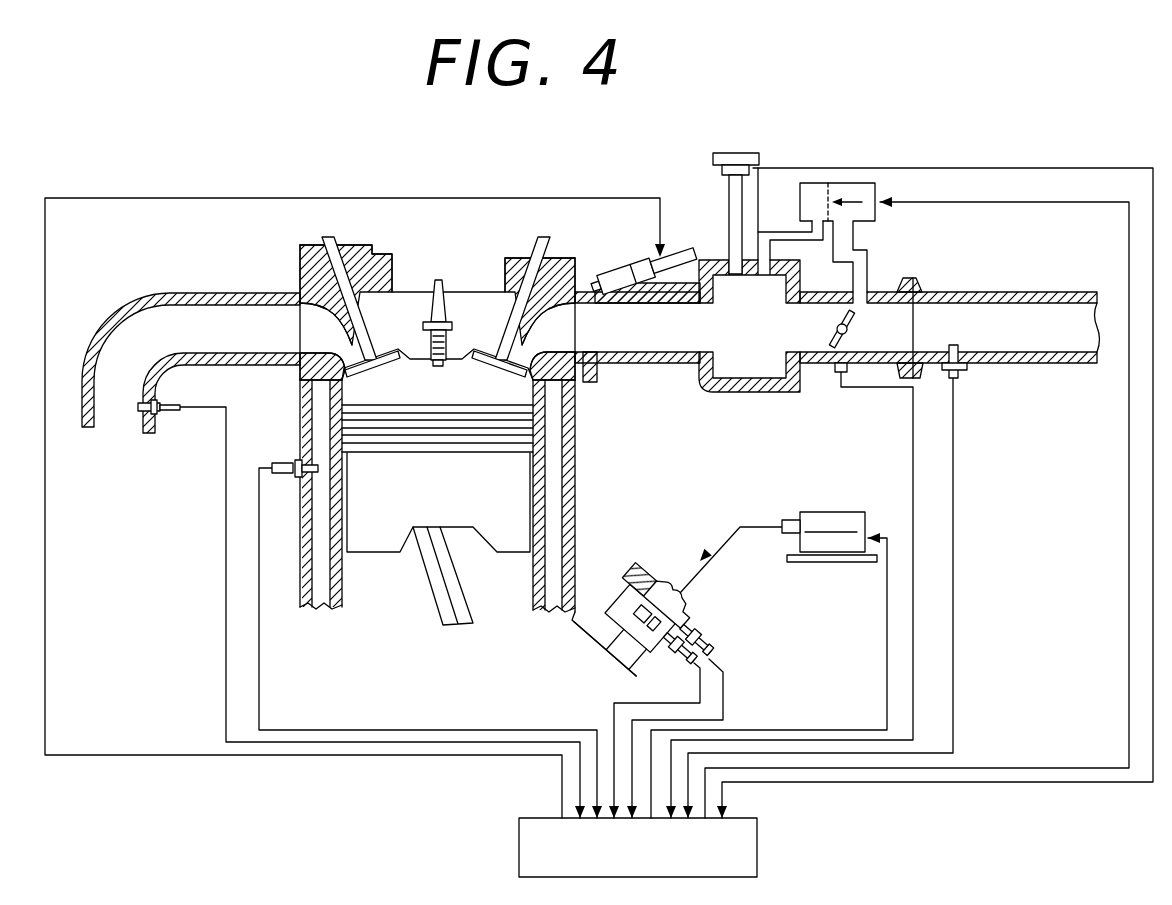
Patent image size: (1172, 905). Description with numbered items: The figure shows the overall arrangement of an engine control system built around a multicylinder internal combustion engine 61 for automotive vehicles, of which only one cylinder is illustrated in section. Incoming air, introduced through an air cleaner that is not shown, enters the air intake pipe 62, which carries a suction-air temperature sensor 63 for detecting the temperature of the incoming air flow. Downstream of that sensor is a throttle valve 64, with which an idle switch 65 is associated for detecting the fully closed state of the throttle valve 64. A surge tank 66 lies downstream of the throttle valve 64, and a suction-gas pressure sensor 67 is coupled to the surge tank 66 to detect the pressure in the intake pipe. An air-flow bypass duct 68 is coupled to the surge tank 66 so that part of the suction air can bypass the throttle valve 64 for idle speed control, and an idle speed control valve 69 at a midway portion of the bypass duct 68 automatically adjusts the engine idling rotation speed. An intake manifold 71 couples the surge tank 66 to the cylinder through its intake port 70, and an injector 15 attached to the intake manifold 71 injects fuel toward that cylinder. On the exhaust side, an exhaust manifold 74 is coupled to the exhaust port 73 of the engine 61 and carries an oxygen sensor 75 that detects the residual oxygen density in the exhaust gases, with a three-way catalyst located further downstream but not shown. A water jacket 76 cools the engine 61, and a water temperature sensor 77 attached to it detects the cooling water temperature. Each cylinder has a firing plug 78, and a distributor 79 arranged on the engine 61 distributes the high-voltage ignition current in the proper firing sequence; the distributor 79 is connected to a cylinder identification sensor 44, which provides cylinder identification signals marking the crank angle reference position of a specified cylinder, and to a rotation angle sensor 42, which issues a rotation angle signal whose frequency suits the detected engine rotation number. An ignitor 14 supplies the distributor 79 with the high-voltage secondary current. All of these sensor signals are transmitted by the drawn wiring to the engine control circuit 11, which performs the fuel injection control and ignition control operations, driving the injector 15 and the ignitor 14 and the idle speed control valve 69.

The engine control circuit 11 is at (757, 856).
The ignitor 14 is at (832, 520).
The injector 15 is at (678, 252).
The rotation angle sensor 42 is at (682, 655).
The cylinder identification sensor 44 is at (706, 637).
The engine 61 is at (578, 437).
The air intake pipe 62 is at (1012, 292).
The suction-air temperature sensor 63 is at (956, 340).
The throttle valve 64 is at (848, 322).
The idle switch 65 is at (838, 374).
The surge tank 66 is at (757, 394).
The suction-gas pressure sensor 67 is at (738, 158).
The air-flow bypass duct 68 is at (778, 228).
The idle speed control valve 69 is at (842, 182).
The intake port 70 is at (578, 320).
The intake manifold 71 is at (655, 365).
The exhaust port 73 is at (312, 335).
The exhaust manifold 74 is at (140, 296).
The oxygen sensor 75 is at (140, 412).
The water jacket 76 is at (320, 538).
The water temperature sensor 77 is at (294, 462).
The firing plug 78 is at (441, 378).
The distributor 79 is at (631, 588).